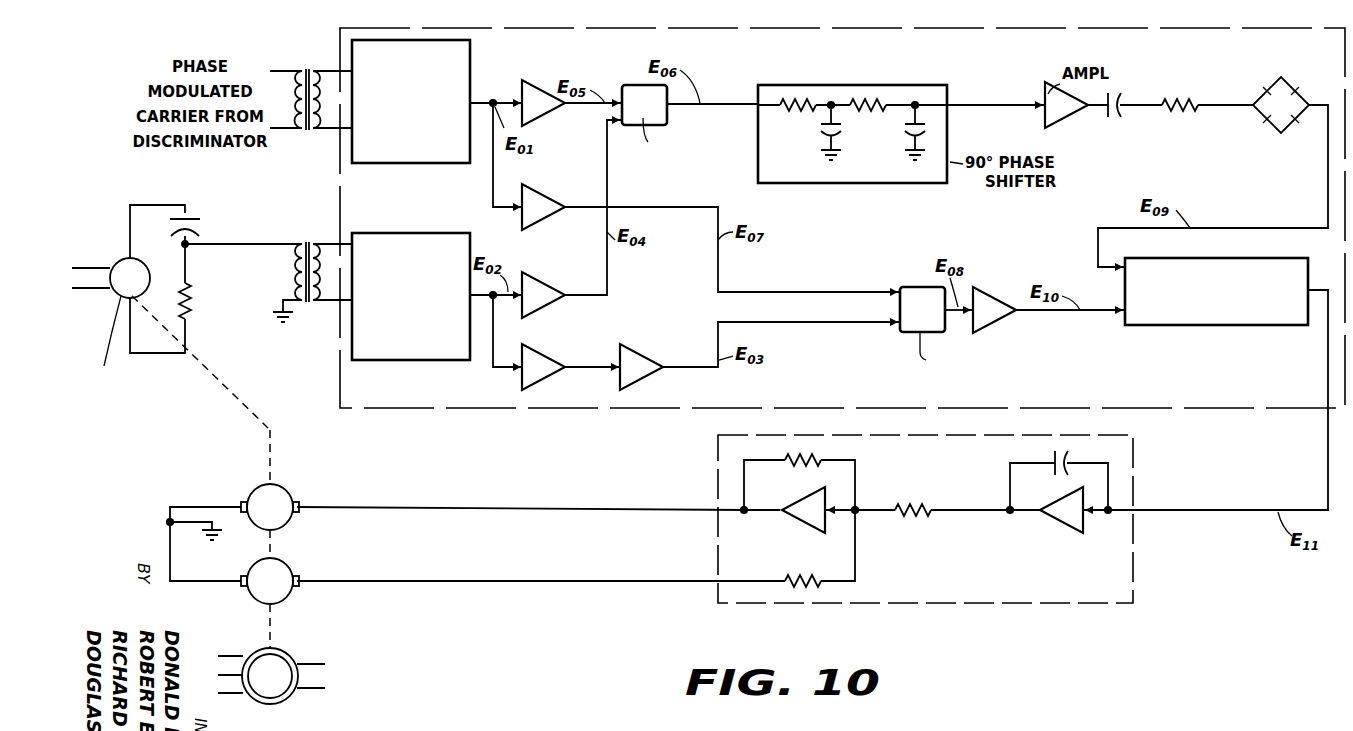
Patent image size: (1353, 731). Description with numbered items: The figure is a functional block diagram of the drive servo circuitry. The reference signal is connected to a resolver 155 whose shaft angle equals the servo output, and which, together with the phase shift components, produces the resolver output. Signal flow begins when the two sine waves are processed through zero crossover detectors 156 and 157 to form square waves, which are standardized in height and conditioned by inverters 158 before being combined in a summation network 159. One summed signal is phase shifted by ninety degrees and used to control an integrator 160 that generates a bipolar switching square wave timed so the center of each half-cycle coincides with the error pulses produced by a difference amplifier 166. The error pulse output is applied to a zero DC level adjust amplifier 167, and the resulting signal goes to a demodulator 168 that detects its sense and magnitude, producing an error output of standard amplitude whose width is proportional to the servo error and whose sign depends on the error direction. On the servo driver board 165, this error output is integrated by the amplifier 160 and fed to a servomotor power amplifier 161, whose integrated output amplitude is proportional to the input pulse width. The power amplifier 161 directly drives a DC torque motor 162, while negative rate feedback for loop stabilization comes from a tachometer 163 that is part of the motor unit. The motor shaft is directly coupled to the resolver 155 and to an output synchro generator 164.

The resolver 155 is at (121, 262).
The zero crossover detector 156 is at (471, 44).
The zero crossover detector 157 is at (415, 233).
The inverters 158 is at (541, 113).
The summation network 159 is at (638, 85).
The integrator 160 is at (1073, 529).
The servomotor power amplifier 161 is at (800, 531).
The DC torque motor 162 is at (282, 491).
The tachometer 163 is at (282, 565).
The output synchro generator 164 is at (281, 656).
The servo driver board 165 is at (716, 452).
The difference amplifier 166 is at (900, 332).
The zero DC level adjust amplifier 167 is at (1014, 318).
The demodulator 168 is at (1186, 333).